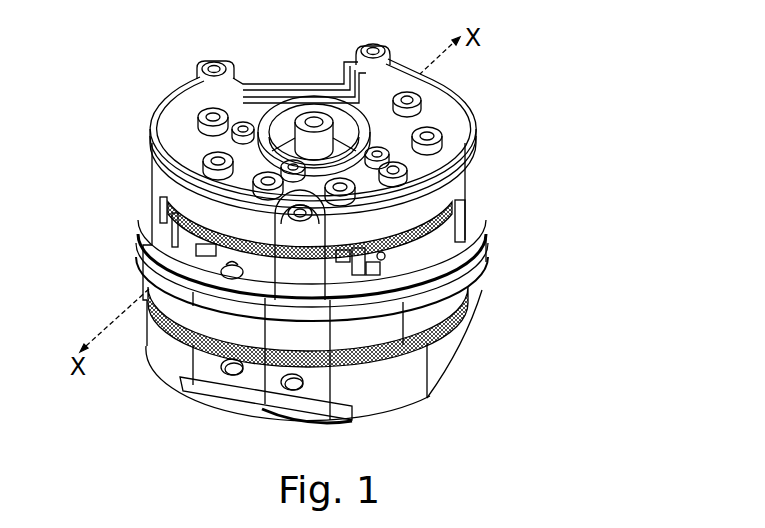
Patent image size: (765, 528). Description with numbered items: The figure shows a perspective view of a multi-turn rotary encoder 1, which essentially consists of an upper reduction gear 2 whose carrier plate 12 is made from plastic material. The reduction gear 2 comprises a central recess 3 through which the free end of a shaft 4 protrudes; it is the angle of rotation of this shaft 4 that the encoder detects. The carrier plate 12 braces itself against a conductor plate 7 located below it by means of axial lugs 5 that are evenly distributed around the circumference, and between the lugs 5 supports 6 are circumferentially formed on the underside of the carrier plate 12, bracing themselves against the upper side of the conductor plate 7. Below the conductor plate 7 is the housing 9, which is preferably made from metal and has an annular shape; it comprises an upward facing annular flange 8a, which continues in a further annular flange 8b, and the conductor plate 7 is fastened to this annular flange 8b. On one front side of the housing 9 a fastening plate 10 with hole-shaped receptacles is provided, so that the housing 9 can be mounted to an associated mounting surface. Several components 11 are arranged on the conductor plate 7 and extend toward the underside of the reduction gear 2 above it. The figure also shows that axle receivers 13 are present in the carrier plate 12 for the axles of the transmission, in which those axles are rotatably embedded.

The multi-turn rotary encoder 1 is at (514, 145).
The reduction gear 2 is at (450, 110).
The central recess 3 is at (284, 93).
The shaft 4 is at (314, 102).
The axial lugs 5 is at (266, 406).
The supports 6 is at (466, 203).
The conductor plate 7 is at (490, 258).
The annular flange 8a is at (474, 330).
The annular flange 8b is at (437, 313).
The housing 9 is at (407, 386).
The fastening plate 10 is at (321, 390).
The components 11 is at (141, 252).
The carrier plate 12 is at (470, 148).
The axle receivers 13 is at (416, 96).